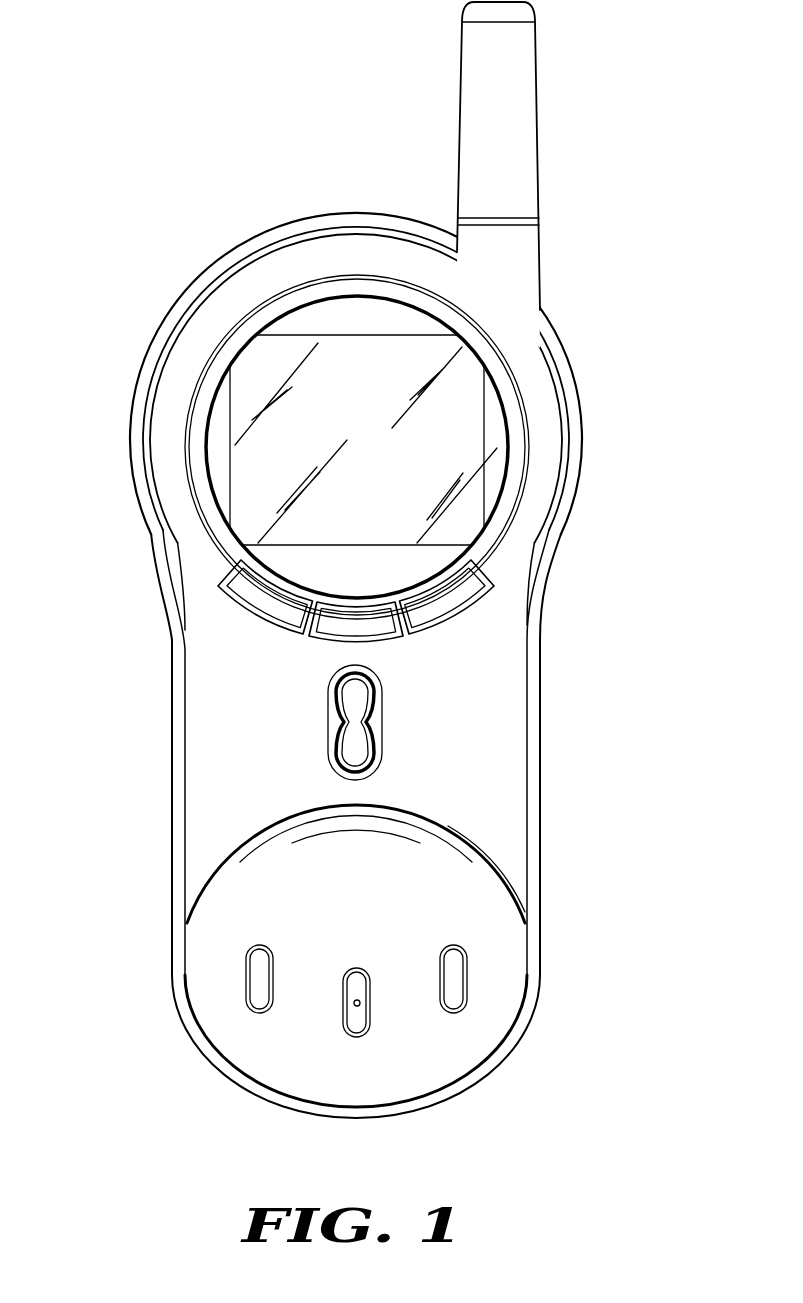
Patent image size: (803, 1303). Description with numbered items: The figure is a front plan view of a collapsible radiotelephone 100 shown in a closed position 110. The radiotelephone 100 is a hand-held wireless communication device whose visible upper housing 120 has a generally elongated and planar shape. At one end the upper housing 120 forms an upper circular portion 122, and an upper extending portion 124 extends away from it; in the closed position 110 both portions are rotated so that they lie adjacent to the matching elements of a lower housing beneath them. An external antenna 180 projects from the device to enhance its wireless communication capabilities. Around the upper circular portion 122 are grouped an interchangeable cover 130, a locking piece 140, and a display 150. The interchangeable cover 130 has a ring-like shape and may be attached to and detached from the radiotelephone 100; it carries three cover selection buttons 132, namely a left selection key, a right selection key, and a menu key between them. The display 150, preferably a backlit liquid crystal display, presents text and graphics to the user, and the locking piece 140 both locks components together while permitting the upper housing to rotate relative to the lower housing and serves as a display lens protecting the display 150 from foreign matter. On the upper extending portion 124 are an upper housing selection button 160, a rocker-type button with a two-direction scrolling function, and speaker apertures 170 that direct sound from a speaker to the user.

The collapsible radiotelephone 100 is at (167, 155).
The closed position 110 is at (563, 80).
The upper housing 120 is at (541, 708).
The upper circular portion 122 is at (583, 430).
The upper extending portion 124 is at (541, 805).
The interchangeable cover 130 is at (540, 383).
The cover selection buttons 132 is at (355, 625).
The locking piece 140 is at (353, 300).
The display 150 is at (222, 425).
The upper housing selection button 160 is at (357, 723).
The speaker apertures 170 is at (259, 997).
The external antenna 180 is at (523, 138).